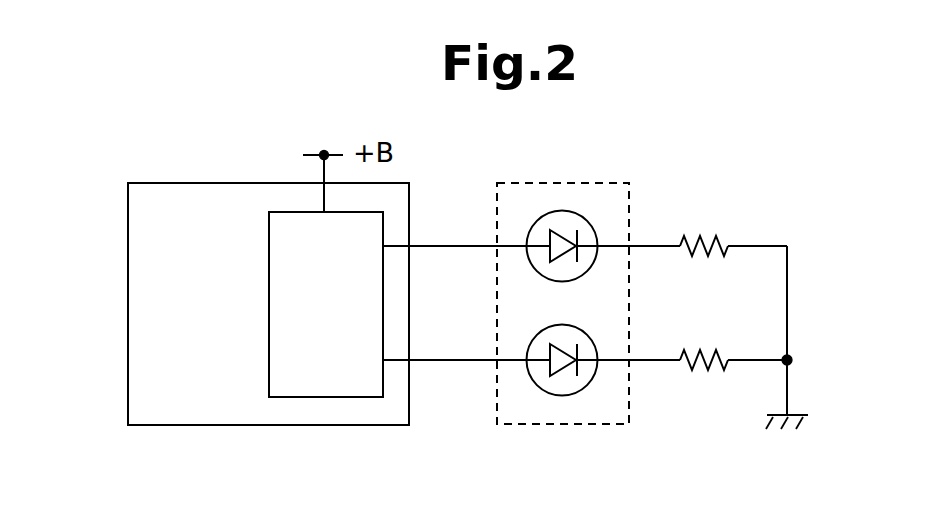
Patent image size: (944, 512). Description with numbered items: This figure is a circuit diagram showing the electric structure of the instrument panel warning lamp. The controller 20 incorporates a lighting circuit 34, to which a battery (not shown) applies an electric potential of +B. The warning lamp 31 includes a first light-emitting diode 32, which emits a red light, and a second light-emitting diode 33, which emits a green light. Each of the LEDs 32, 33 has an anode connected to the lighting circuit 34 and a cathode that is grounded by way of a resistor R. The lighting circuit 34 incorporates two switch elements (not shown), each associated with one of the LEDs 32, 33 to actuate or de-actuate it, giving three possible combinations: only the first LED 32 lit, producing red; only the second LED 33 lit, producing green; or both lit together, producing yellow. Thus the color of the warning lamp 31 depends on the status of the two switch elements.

The controller 20 is at (128, 294).
The warning lamp 31 is at (605, 182).
The first light-emitting diode 32 is at (558, 211).
The second light-emitting diode 33 is at (562, 396).
The lighting circuit 34 is at (350, 397).
The resistor R is at (722, 245).